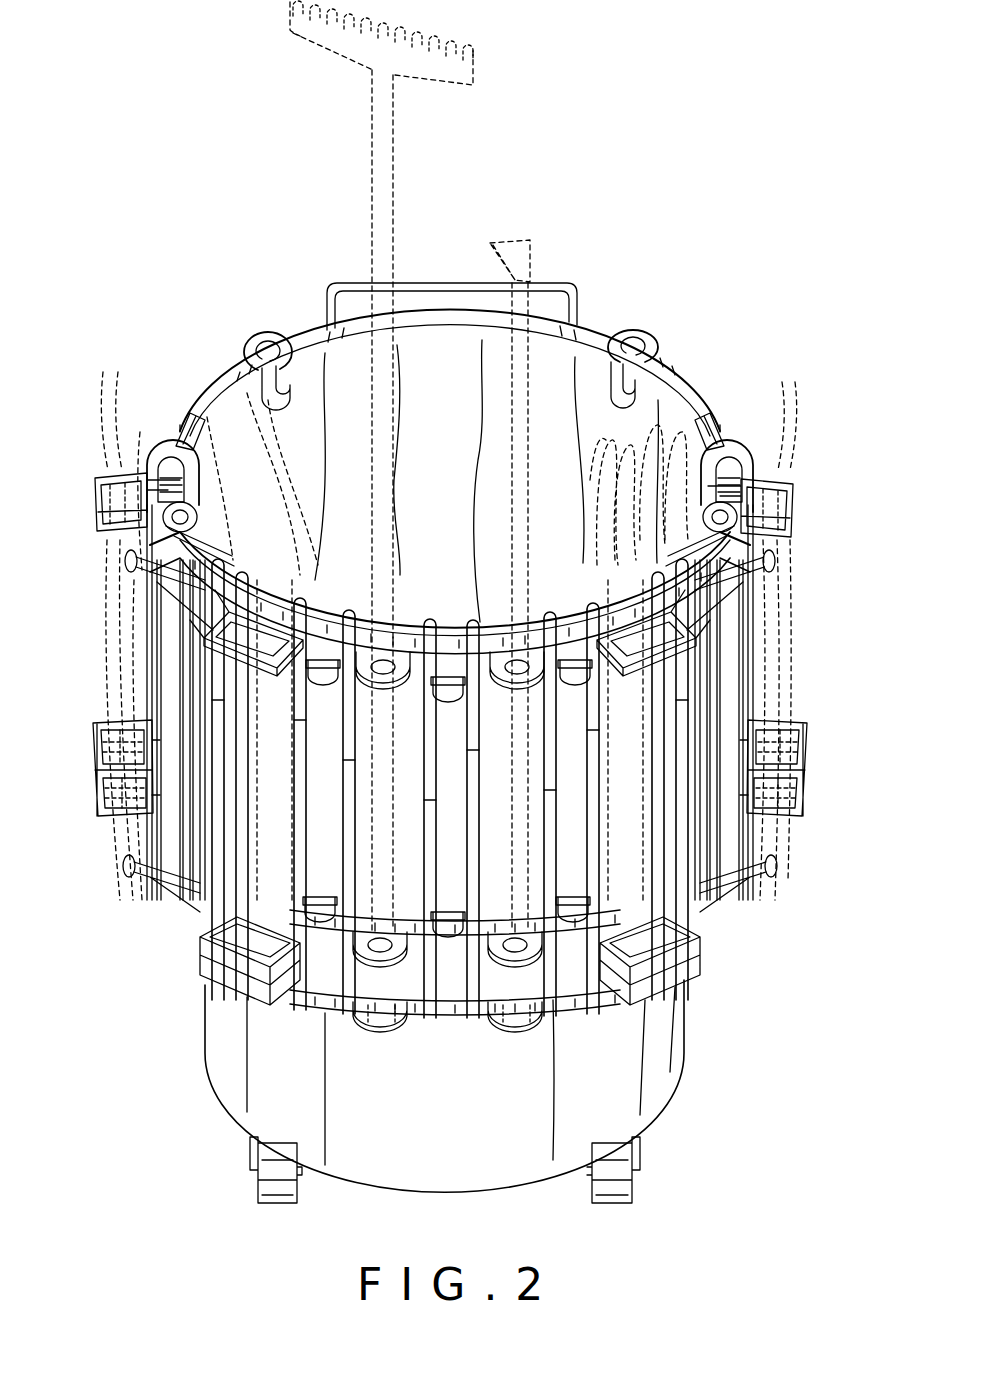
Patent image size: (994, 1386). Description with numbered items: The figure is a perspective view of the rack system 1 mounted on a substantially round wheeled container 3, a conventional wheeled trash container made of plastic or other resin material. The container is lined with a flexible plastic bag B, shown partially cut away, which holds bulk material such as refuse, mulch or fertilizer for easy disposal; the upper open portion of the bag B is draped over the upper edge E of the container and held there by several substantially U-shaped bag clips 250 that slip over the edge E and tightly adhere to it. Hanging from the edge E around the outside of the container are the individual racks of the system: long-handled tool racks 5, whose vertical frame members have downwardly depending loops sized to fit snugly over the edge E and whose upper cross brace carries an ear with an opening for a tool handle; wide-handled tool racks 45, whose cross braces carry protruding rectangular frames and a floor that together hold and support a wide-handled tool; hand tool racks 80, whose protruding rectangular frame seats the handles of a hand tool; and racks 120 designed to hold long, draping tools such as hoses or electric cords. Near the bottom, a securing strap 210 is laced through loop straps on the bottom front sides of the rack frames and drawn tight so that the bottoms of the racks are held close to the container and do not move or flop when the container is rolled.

The rack system 1 is at (172, 362).
The round wheeled container 3 is at (718, 428).
The long-handled tool rack 5 is at (372, 1025).
The wide-handled tool rack 45 is at (220, 1005).
The hand tool rack 80 is at (97, 512).
The draping tool rack 120 is at (123, 862).
The securing strap 210 is at (443, 1012).
The bag clip 250 is at (263, 335).
The plastic bag B is at (587, 387).
The upper edge E is at (178, 418).